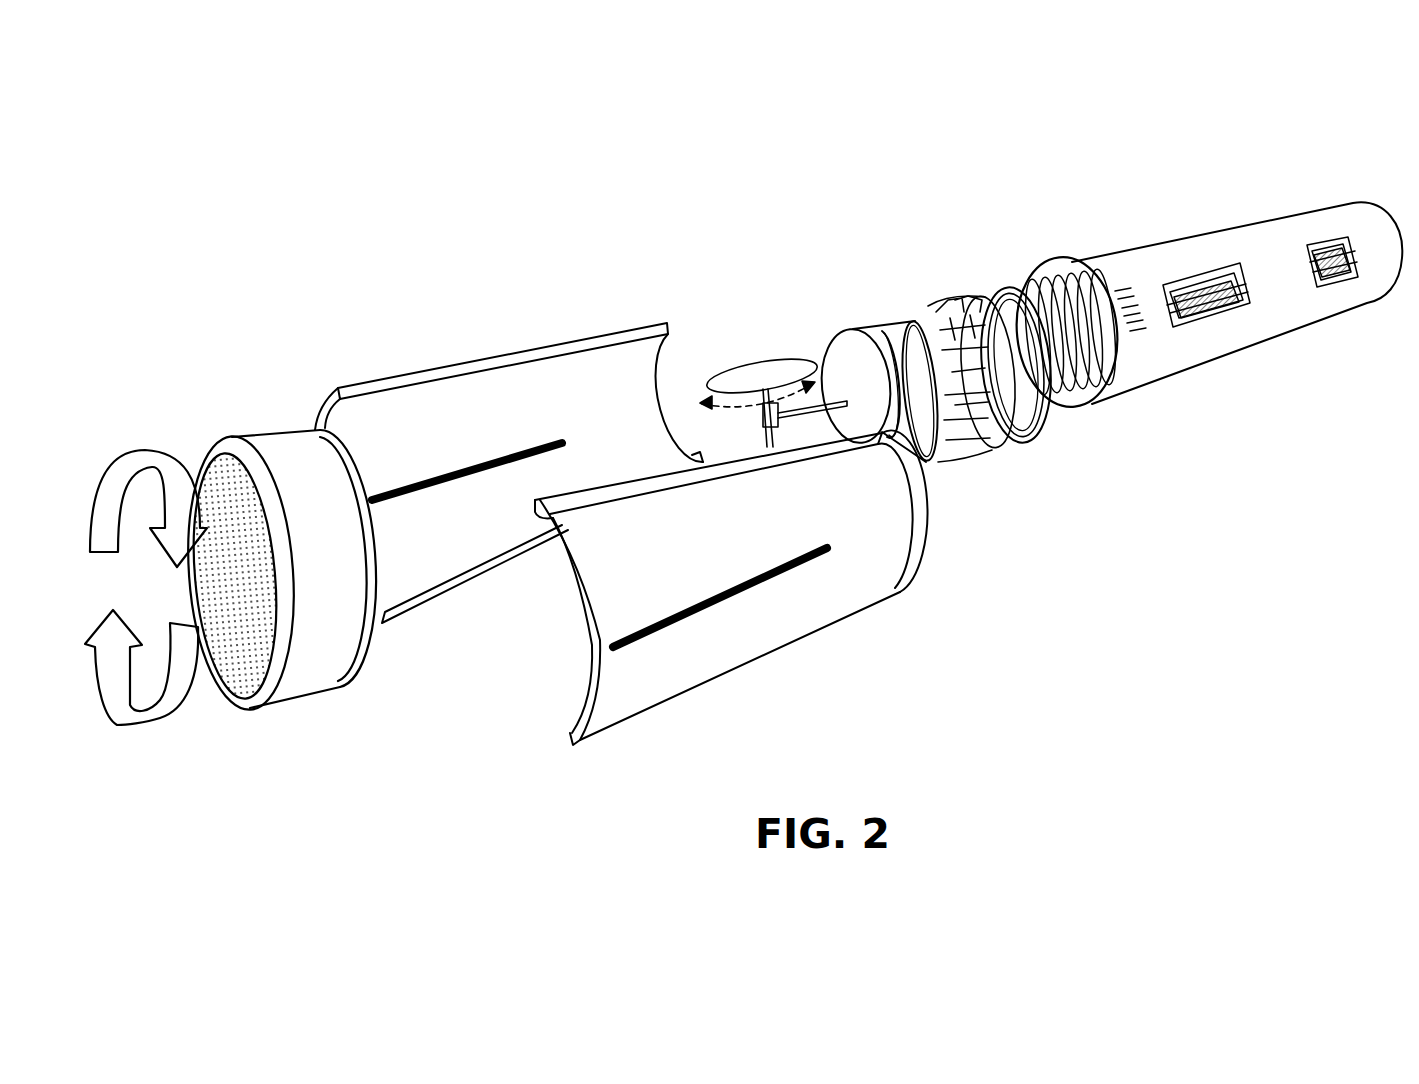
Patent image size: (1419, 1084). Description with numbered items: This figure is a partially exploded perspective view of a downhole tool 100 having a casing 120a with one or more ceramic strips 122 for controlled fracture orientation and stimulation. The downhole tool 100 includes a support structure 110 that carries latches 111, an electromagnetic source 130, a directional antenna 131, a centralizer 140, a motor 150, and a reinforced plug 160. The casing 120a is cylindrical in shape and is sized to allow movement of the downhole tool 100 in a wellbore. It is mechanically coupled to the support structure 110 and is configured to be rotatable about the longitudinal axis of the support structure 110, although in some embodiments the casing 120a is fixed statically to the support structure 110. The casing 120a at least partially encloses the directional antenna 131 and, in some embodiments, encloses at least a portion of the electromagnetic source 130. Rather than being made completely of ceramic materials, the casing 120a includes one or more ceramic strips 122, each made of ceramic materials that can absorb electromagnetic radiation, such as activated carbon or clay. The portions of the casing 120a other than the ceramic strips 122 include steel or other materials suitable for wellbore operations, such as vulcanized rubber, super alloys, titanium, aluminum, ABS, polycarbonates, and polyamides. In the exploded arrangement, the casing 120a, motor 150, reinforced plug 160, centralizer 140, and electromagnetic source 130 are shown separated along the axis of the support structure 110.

The downhole tool 100 is at (1150, 578).
The support structure 110 is at (1237, 282).
The latches 111 is at (1345, 268).
The casing 120a is at (898, 545).
The ceramic strips 122 is at (445, 473).
The electromagnetic source 130 is at (1050, 280).
The directional antenna 131 is at (765, 368).
The centralizer 140 is at (985, 428).
The motor 150 is at (317, 673).
The reinforced plug 160 is at (187, 590).